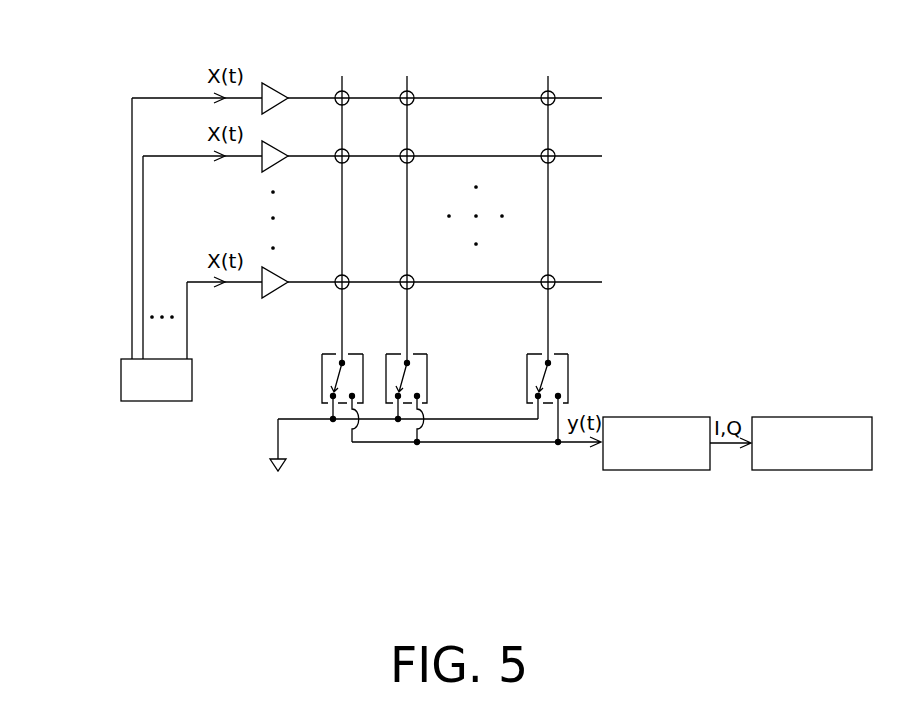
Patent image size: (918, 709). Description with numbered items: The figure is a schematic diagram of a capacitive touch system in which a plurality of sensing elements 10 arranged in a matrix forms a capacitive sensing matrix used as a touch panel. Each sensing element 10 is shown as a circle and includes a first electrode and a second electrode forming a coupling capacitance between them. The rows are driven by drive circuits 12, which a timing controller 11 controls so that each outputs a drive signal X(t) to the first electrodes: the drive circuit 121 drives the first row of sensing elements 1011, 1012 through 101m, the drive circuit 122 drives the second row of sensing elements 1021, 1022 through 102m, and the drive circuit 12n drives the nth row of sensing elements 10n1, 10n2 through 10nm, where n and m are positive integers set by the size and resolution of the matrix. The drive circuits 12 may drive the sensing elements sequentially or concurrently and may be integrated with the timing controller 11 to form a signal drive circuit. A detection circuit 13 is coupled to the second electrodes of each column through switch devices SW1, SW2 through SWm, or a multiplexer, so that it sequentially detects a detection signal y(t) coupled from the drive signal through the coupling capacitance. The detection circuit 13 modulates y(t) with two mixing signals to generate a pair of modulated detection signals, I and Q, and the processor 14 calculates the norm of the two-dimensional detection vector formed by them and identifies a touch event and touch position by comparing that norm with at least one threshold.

The sensing elements 10 is at (472, 186).
The sensing element 1011 is at (366, 86).
The sensing element 1012 is at (435, 86).
The sensing element 101m is at (575, 86).
The sensing element 1021 is at (366, 144).
The sensing element 1022 is at (435, 144).
The sensing element 102m is at (575, 144).
The sensing element 10n1 is at (366, 269).
The sensing element 10n2 is at (435, 269).
The sensing element 10nm is at (575, 269).
The timing controller 11 is at (121, 383).
The drive circuits 12 is at (280, 196).
The drive circuit 121 is at (273, 83).
The drive circuit 122 is at (273, 145).
The drive circuit 12n is at (273, 299).
The switch device SW1 is at (337, 430).
The switch device SW2 is at (413, 445).
The switch device SWm is at (547, 410).
The detection circuit 13 is at (655, 470).
The processor 14 is at (805, 470).